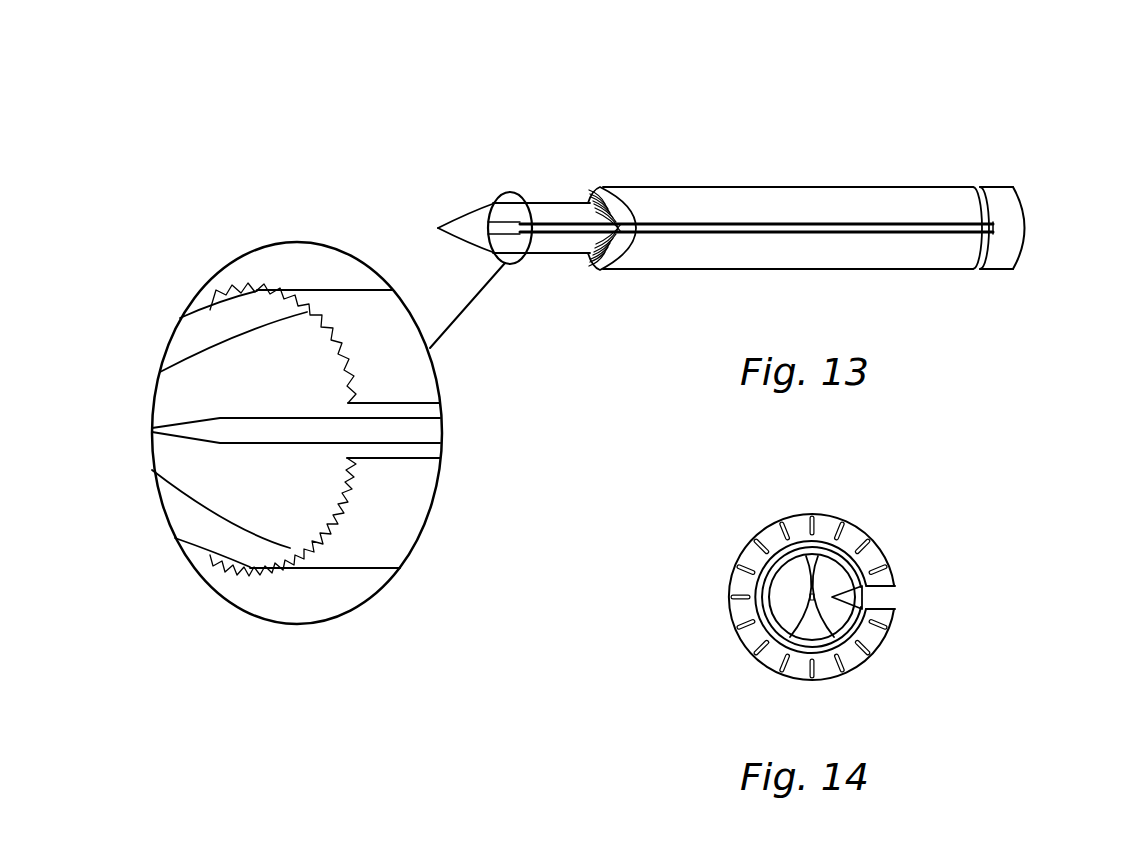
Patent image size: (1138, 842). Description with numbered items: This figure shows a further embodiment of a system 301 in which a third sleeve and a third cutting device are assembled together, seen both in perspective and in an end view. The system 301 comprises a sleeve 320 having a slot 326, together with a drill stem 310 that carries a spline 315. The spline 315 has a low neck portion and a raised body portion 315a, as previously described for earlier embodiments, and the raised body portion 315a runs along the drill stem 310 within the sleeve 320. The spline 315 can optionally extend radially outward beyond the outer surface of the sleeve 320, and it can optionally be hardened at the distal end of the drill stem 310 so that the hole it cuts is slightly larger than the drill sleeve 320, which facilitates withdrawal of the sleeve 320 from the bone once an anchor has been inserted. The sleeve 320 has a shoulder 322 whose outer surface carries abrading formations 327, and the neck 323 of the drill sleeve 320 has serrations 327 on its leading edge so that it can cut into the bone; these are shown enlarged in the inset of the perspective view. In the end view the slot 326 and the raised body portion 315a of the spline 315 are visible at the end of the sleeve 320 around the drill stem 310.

In FIG. 13, the system 301 is at (721, 94).
In FIG. 13, the drill stem 310 is at (470, 205).
In FIG. 14, the drill stem 310 is at (782, 607).
In FIG. 13, the spline 315 is at (549, 224).
In FIG. 14, the spline 315 is at (846, 594).
In FIG. 13, the raised body portion 315a is at (772, 236).
In FIG. 14, the raised body portion 315a is at (895, 600).
In FIG. 13, the sleeve 320 is at (848, 187).
In FIG. 14, the sleeve 320 is at (852, 514).
In FIG. 13, the shoulder 322 is at (597, 187).
In FIG. 13, the neck 323 is at (378, 328).
In FIG. 14, the slot 326 is at (860, 654).
In FIG. 13, the abrading formations 327 is at (612, 269).